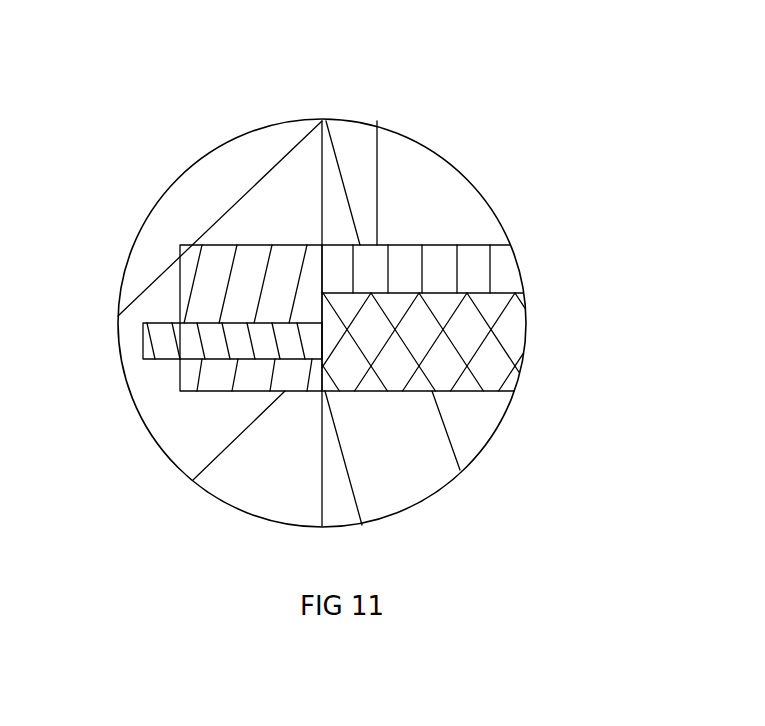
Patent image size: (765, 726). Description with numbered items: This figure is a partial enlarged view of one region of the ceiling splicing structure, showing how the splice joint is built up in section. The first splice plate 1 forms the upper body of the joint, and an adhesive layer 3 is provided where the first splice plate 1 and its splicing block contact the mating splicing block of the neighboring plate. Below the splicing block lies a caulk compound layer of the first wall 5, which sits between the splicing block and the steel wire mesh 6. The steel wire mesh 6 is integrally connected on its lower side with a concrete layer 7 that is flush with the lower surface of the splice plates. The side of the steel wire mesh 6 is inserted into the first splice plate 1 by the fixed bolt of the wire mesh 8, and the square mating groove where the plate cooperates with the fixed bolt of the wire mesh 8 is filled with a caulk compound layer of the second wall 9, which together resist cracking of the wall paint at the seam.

The first splice plate 1 is at (275, 205).
The adhesive layer 3 is at (458, 72).
The caulk compound layer of the first wall 5 is at (548, 172).
The steel wire mesh 6 is at (587, 363).
The concrete layer 7 is at (517, 492).
The fixed bolt of the wire mesh 8 is at (133, 487).
The caulk compound layer of the second wall 9 is at (198, 318).